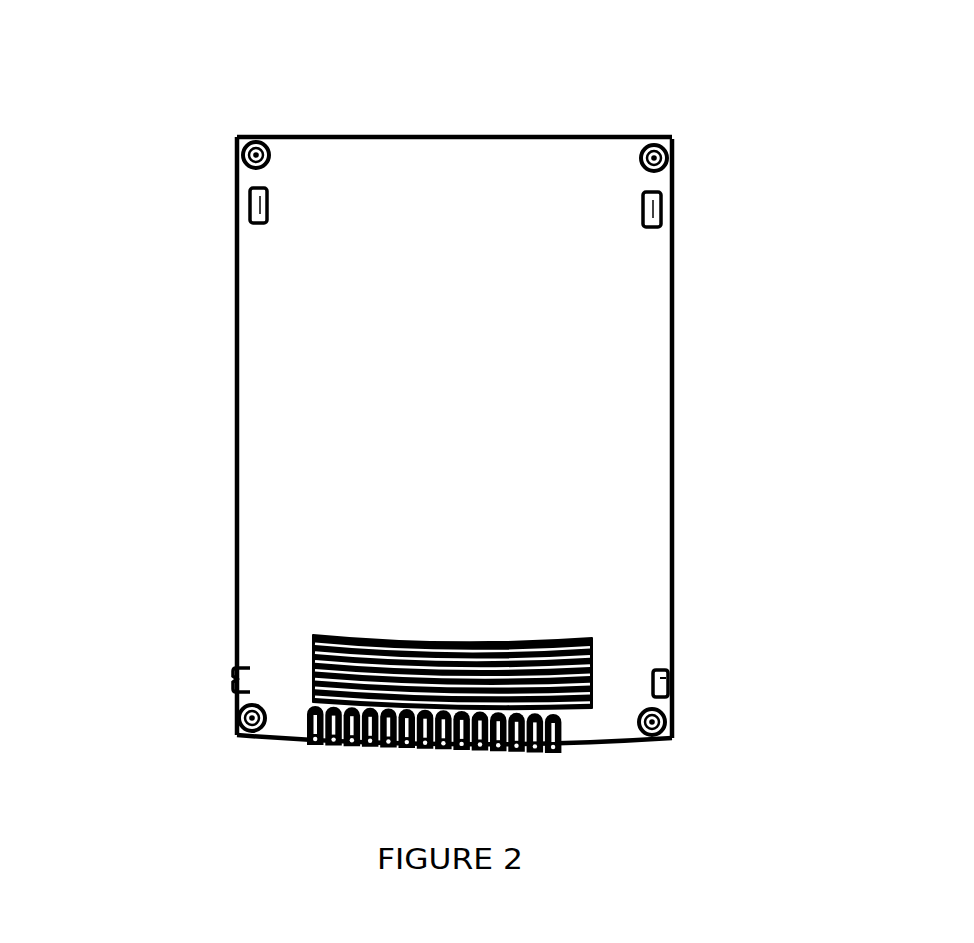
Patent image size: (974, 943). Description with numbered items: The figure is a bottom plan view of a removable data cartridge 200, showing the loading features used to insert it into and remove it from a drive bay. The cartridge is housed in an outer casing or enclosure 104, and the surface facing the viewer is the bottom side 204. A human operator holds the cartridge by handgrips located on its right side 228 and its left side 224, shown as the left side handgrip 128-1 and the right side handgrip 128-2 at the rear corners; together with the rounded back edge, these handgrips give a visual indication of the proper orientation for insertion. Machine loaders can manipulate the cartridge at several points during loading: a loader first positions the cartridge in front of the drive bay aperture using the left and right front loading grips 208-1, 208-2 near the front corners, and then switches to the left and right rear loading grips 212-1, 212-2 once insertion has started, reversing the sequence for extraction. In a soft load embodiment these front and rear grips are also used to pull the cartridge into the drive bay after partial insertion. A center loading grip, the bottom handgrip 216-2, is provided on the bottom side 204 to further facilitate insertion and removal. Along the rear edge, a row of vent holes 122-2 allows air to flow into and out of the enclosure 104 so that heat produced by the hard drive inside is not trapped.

The data cartridge 200 is at (427, 76).
The enclosure 104 is at (684, 130).
The bottom side 204 is at (472, 395).
The right side 228 is at (228, 427).
The left side 224 is at (682, 428).
The left front loading grip 208-1 is at (652, 205).
The right front loading grip 208-2 is at (256, 200).
The left rear loading grip 212-1 is at (666, 678).
The right rear loading grip 212-2 is at (240, 677).
The left side handgrip 128-1 is at (676, 710).
The right side handgrip 128-2 is at (232, 707).
The bottom handgrip 216-2 is at (320, 668).
The vent holes 122-2 is at (483, 750).